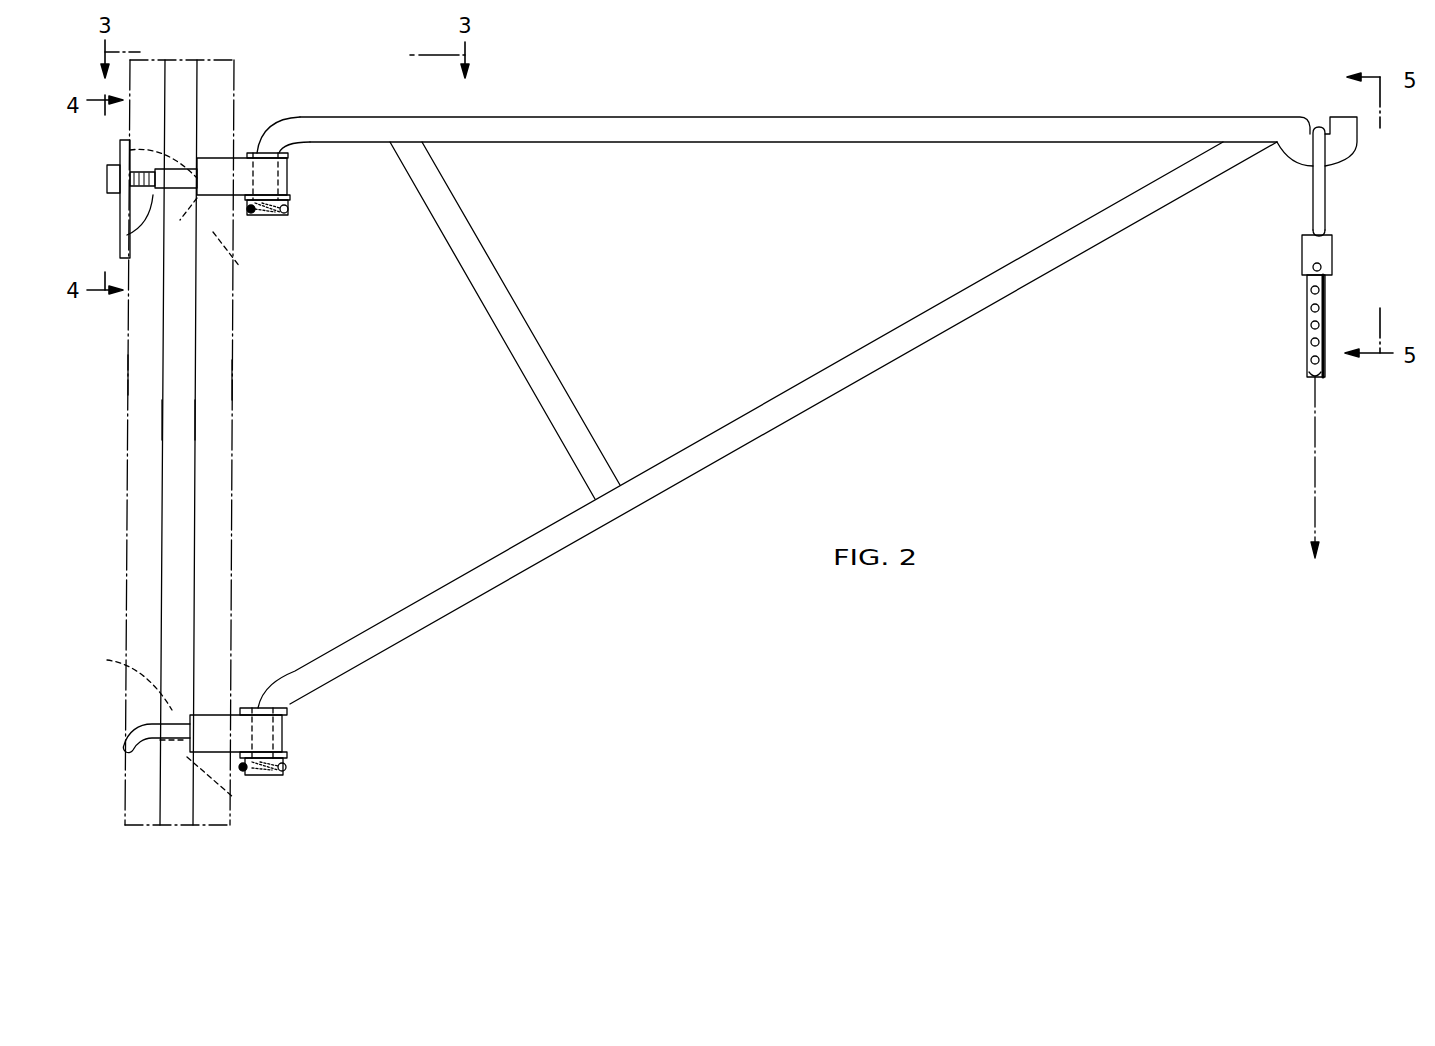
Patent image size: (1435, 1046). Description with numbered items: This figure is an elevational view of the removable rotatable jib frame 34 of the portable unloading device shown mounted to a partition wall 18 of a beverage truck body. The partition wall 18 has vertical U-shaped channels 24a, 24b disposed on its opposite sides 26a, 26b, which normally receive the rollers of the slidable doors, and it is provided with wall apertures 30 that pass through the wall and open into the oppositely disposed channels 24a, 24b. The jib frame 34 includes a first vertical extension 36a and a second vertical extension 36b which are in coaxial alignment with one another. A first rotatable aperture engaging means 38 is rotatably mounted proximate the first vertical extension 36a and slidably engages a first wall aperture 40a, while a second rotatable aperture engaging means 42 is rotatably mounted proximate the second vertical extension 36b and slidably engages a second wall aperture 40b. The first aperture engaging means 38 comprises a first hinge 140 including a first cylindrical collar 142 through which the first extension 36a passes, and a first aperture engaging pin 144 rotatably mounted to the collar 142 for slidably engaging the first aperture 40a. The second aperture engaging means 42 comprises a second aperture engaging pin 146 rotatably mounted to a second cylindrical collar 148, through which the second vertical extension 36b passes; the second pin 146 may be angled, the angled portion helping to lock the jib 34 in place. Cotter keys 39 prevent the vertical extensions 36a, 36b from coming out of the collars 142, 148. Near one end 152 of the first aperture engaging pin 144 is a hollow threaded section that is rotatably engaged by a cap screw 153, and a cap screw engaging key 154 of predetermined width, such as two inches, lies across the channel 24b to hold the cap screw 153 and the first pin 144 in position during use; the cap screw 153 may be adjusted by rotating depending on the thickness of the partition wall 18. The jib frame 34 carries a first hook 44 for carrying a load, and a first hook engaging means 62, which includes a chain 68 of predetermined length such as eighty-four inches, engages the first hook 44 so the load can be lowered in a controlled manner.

The partition wall 18 is at (218, 505).
The vertical U-shaped channel 24a is at (220, 430).
The vertical U-shaped channel 24b is at (142, 430).
The side of partition wall 26a is at (232, 384).
The side of partition wall 26b is at (135, 373).
The wall aperture 30 is at (121, 148).
The removable rotatable jib frame 34 is at (873, 372).
The first vertical extension 36a is at (283, 218).
The second vertical extension 36b is at (286, 775).
The first rotatable aperture engaging means 38 is at (294, 176).
The cotter key 39 is at (295, 215).
The first wall aperture 40a is at (231, 241).
The second wall aperture 40b is at (232, 787).
The second rotatable aperture engaging means 42 is at (288, 712).
The first hook 44 is at (1340, 147).
The first hook engaging means 62 is at (1325, 283).
The chain 68 is at (1307, 322).
The first hinge 140 is at (232, 152).
The first cylindrical collar 142 is at (290, 156).
The first aperture engaging pin 144 is at (120, 235).
The second aperture engaging pin 146 is at (122, 745).
The second cylindrical collar 148 is at (288, 755).
The end of first aperture engaging pin 152 is at (197, 185).
The cap screw 153 is at (107, 170).
The cap screw engaging key 154 is at (122, 205).